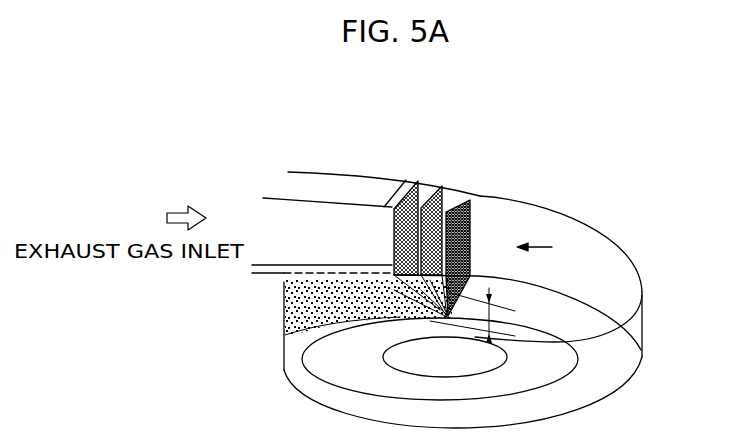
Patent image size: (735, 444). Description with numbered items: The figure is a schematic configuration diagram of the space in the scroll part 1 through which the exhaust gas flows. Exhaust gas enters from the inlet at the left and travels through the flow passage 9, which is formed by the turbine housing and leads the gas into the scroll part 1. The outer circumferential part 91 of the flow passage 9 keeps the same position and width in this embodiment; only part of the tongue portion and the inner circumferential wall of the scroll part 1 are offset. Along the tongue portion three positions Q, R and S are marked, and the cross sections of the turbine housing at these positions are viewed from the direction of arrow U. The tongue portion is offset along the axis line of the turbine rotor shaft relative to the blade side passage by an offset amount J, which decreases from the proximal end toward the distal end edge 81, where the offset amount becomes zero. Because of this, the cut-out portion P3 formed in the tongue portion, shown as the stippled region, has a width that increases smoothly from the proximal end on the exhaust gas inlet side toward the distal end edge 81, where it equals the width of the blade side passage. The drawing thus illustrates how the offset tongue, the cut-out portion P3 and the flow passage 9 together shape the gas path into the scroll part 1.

The scroll part 1 is at (641, 373).
The flow passage 9 is at (347, 218).
The outer circumferential part 91 is at (300, 188).
The distal end edge 81 is at (490, 320).
The cut-out portion P3 is at (392, 284).
The position Q is at (404, 215).
The position R is at (437, 219).
The position S is at (435, 244).
The arrow U is at (543, 248).
The offset amount J is at (472, 315).